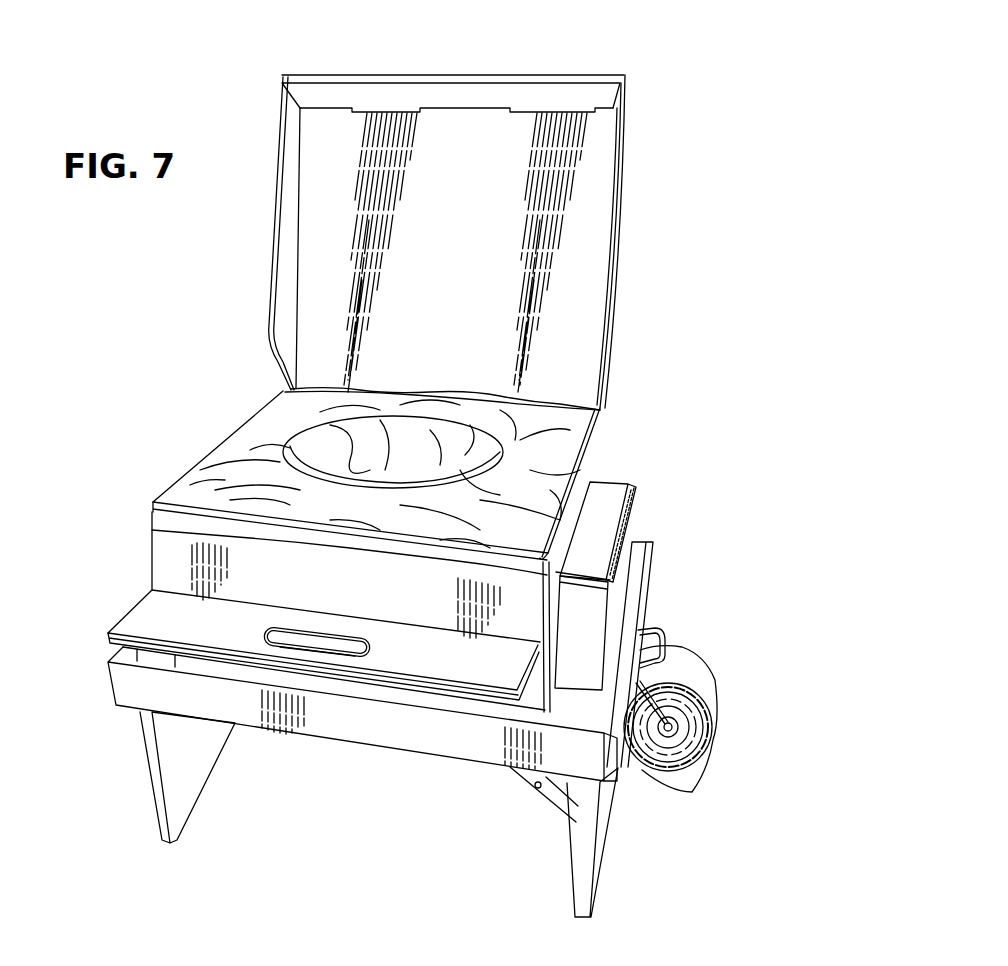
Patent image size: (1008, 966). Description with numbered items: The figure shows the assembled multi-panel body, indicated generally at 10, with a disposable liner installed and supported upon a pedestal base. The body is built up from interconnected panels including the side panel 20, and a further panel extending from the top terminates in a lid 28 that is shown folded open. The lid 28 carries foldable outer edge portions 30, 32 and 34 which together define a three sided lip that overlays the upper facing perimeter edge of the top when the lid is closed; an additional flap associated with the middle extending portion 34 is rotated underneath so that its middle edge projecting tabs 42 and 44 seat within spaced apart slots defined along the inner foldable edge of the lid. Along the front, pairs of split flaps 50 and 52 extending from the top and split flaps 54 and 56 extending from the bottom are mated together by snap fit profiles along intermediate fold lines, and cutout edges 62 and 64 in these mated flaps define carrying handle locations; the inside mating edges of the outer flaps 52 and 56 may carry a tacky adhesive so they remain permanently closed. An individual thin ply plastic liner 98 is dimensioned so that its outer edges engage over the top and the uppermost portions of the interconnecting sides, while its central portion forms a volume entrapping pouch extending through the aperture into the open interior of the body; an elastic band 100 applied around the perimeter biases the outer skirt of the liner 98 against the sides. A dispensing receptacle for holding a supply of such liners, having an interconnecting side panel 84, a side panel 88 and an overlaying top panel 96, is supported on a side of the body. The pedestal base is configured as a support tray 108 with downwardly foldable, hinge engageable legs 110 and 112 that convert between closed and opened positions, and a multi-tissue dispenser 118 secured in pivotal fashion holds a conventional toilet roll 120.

The portable toilet apparatus 10 is at (108, 372).
The side panel 20 is at (549, 702).
The lid 28 is at (445, 260).
The foldable outer edge portion 30 is at (618, 250).
The foldable outer edge portion 32 is at (283, 203).
The middle extending portion 34 is at (403, 75).
The projecting tab 42 is at (368, 112).
The projecting tab 44 is at (522, 110).
The split flap 50 is at (162, 547).
The split flap 52 is at (127, 625).
The split flap 54 is at (527, 705).
The split flap 56 is at (120, 645).
The cutout edge 62 is at (272, 638).
The cutout edge 64 is at (320, 648).
The interconnecting side panel 84 is at (622, 550).
The side panel 88 is at (582, 631).
The overlaying top panel 96 is at (598, 532).
The liner 98 is at (281, 397).
The elastic band 100 is at (150, 517).
The support tray 108 is at (247, 713).
The leg 110 is at (153, 747).
The leg 112 is at (600, 813).
The multi-tissue dispenser 118 is at (672, 734).
The toilet roll 120 is at (692, 660).